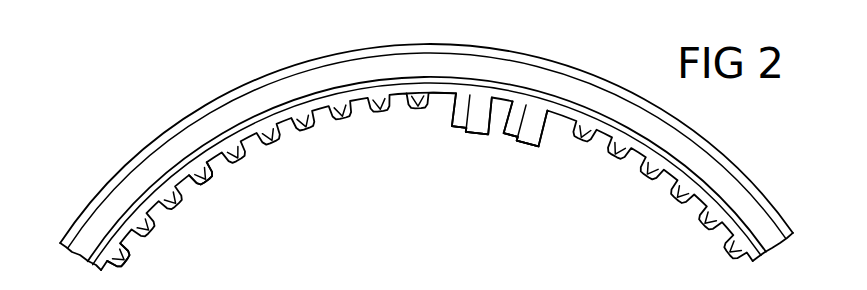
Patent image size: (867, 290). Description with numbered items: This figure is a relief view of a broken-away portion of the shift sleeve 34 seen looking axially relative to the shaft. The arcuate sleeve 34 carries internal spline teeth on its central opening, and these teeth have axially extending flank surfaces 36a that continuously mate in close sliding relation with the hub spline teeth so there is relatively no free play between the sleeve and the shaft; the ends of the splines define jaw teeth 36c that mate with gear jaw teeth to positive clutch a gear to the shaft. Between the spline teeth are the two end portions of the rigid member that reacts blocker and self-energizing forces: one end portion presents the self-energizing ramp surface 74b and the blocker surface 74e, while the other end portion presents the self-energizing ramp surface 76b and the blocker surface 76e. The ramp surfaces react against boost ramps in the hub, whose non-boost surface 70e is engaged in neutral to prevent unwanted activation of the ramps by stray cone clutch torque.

The shift sleeve 34 is at (268, 66).
The flank surface 36a is at (113, 270).
The jaw tooth 36c is at (210, 172).
The self-energizing ramp surface 76b is at (455, 111).
The blocker surface 76e is at (479, 132).
The blocker surface 74e is at (512, 140).
The self-energizing ramp surface 74b is at (542, 136).
The non-boost surface 70e is at (466, 191).